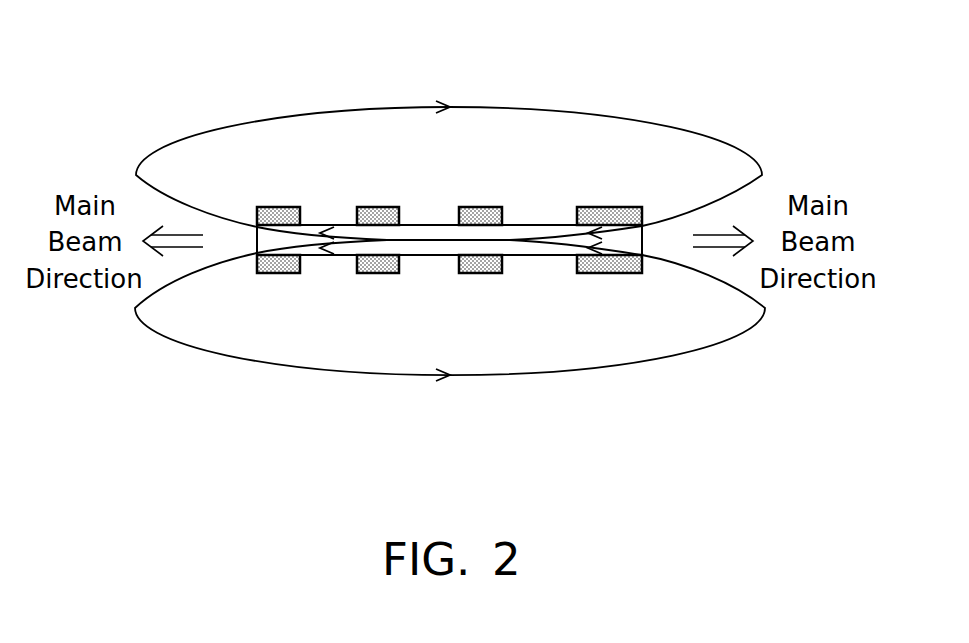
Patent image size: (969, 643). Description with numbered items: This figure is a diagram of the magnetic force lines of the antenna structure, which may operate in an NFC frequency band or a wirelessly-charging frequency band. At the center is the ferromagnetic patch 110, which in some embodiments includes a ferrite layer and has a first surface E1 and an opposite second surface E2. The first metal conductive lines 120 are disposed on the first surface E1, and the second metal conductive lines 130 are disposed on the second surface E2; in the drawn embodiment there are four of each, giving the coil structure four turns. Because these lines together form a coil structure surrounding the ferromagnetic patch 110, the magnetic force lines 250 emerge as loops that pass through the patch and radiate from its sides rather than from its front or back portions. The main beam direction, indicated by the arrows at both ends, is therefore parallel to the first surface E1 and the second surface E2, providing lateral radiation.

The ferromagnetic patch 110 is at (643, 243).
The first metal conductive lines 120 is at (280, 207).
The second metal conductive lines 130 is at (281, 273).
The magnetic force lines 250 is at (374, 107).
The first surface E1 is at (545, 225).
The second surface E2 is at (548, 258).